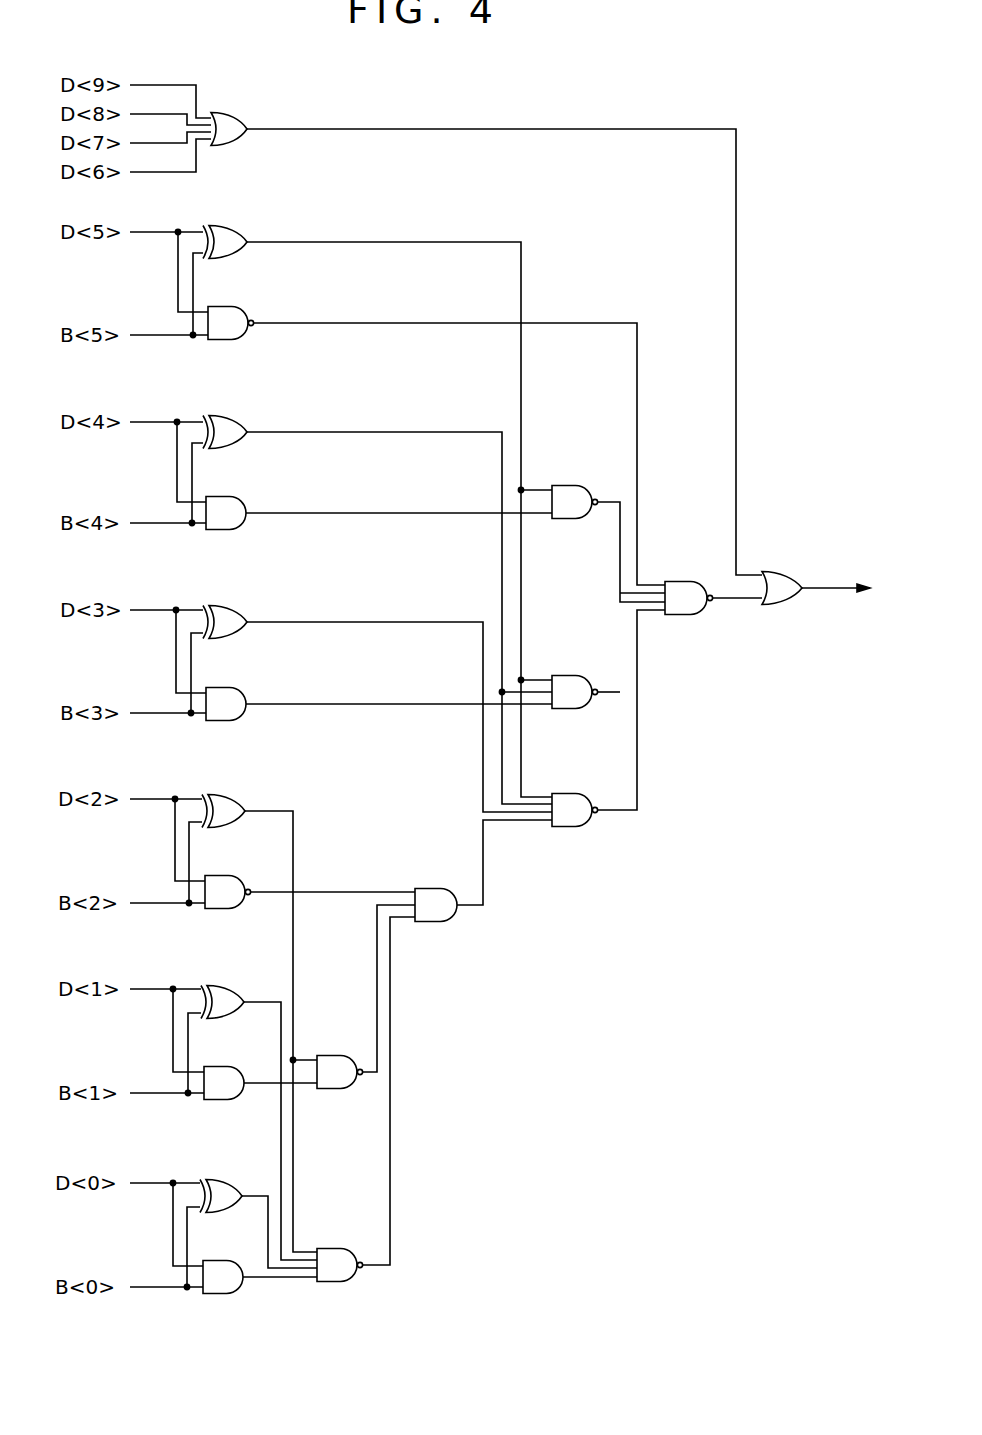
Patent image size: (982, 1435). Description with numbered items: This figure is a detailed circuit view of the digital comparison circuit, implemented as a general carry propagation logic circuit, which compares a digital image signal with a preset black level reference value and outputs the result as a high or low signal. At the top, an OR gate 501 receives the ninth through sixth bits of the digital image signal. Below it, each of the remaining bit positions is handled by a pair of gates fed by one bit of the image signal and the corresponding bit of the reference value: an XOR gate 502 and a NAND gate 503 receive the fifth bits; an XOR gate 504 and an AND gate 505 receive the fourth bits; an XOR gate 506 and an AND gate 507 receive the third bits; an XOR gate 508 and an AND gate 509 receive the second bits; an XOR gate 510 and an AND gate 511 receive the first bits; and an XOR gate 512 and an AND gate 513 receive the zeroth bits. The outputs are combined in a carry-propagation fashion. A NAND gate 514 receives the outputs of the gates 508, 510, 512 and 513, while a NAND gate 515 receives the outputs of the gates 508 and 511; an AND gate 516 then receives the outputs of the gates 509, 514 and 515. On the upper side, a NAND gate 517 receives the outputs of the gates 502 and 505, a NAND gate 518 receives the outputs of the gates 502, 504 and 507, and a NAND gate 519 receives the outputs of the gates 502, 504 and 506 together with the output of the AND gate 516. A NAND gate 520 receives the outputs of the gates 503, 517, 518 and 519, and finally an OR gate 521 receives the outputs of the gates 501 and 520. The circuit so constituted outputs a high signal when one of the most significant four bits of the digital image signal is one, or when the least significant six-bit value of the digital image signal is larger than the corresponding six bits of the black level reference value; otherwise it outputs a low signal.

The OR gate 501 is at (233, 114).
The XOR gate 502 is at (225, 228).
The NAND gate 503 is at (228, 311).
The XOR gate 504 is at (223, 418).
The AND gate 505 is at (224, 501).
The XOR gate 506 is at (223, 608).
The AND gate 507 is at (221, 689).
The XOR gate 508 is at (220, 798).
The AND gate 509 is at (225, 879).
The XOR gate 510 is at (223, 988).
The AND gate 511 is at (223, 1069).
The XOR gate 512 is at (220, 1183).
The AND gate 513 is at (220, 1263).
The NAND gate 514 is at (337, 1252).
The NAND gate 515 is at (337, 1058).
The AND gate 516 is at (433, 892).
The NAND gate 517 is at (574, 489).
The NAND gate 518 is at (573, 679).
The NAND gate 519 is at (572, 796).
The NAND gate 520 is at (687, 586).
The OR gate 521 is at (781, 575).